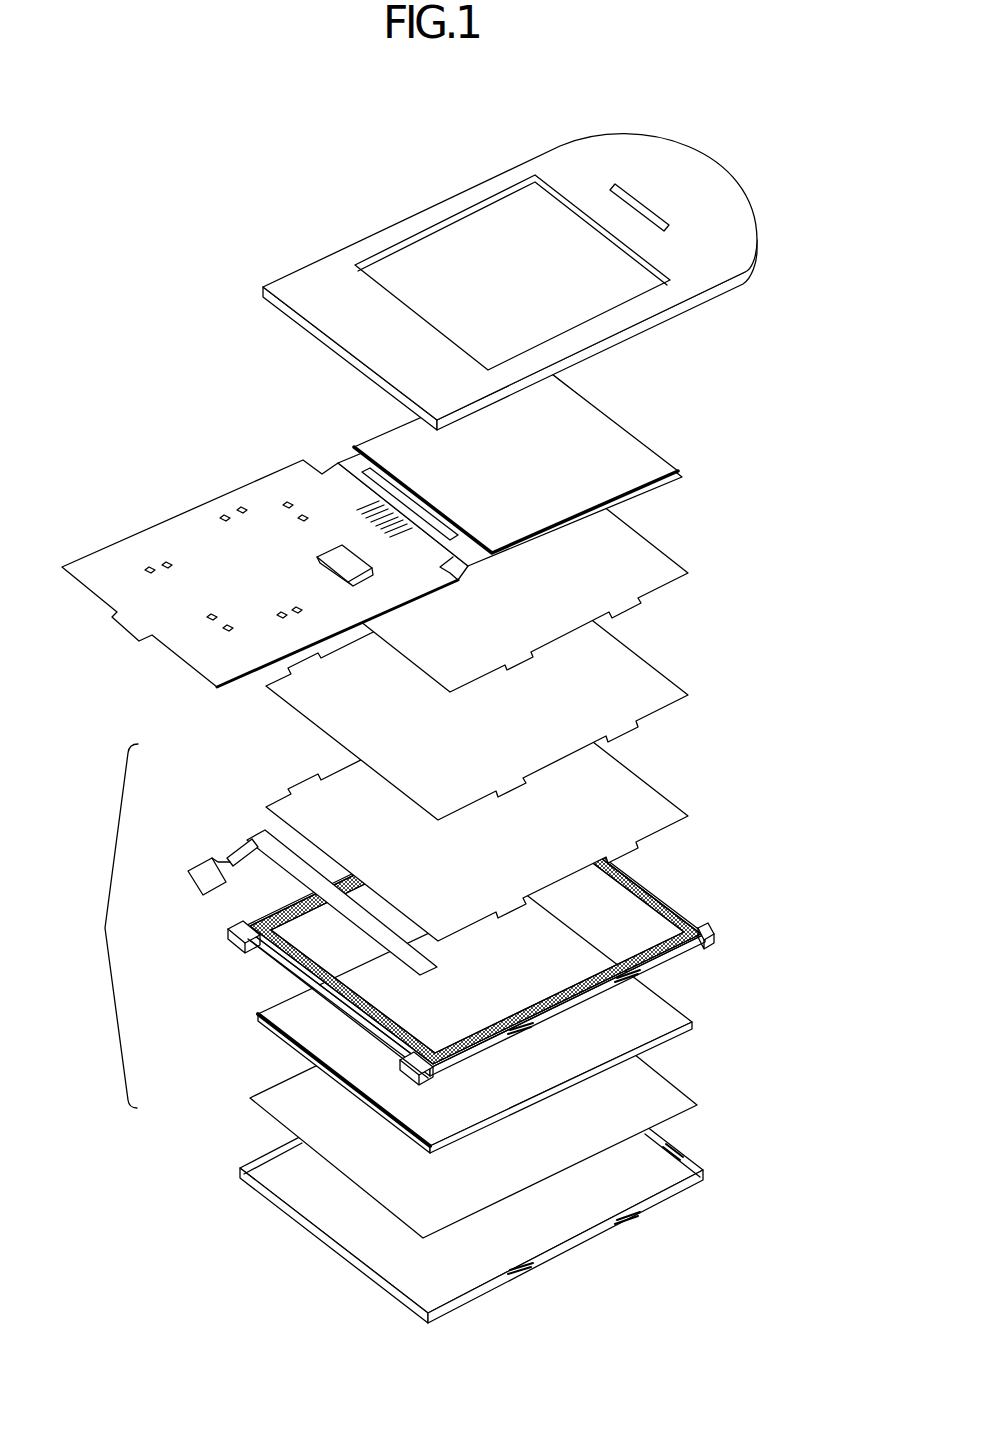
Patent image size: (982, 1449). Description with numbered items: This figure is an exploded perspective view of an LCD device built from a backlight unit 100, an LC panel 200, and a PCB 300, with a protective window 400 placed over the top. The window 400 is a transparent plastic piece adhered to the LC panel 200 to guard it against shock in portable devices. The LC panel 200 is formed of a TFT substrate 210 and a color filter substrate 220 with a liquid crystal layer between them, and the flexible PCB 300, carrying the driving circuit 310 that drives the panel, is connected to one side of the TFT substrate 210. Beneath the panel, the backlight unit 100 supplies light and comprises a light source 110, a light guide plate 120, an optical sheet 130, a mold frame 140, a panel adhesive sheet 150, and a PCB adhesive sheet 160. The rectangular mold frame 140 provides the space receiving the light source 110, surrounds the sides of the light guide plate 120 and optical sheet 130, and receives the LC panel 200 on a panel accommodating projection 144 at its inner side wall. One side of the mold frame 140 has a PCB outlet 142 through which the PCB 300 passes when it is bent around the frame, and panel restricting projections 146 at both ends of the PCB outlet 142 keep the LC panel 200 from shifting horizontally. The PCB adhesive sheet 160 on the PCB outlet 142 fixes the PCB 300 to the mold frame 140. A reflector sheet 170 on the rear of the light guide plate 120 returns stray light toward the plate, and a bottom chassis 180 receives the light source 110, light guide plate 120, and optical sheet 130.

The backlight unit 100 is at (98, 926).
The light source 110 is at (257, 838).
The light guide plate 120 is at (287, 1048).
The optical sheet 130 is at (417, 655).
The mold frame 140 is at (469, 939).
The PCB outlet 142 is at (318, 1014).
The panel accommodating projection 144 is at (633, 873).
The panel restricting projection 146 is at (233, 923).
The panel adhesive sheet 150 is at (670, 908).
The PCB adhesive sheet 160 is at (280, 970).
The reflector sheet 170 is at (247, 1100).
The bottom chassis 180 is at (700, 1192).
The LC panel 200 is at (579, 465).
The TFT substrate 210 is at (678, 478).
The color filter substrate 220 is at (662, 463).
The PCB 300 is at (265, 565).
The driving circuit 310 is at (332, 558).
The window 400 is at (463, 227).